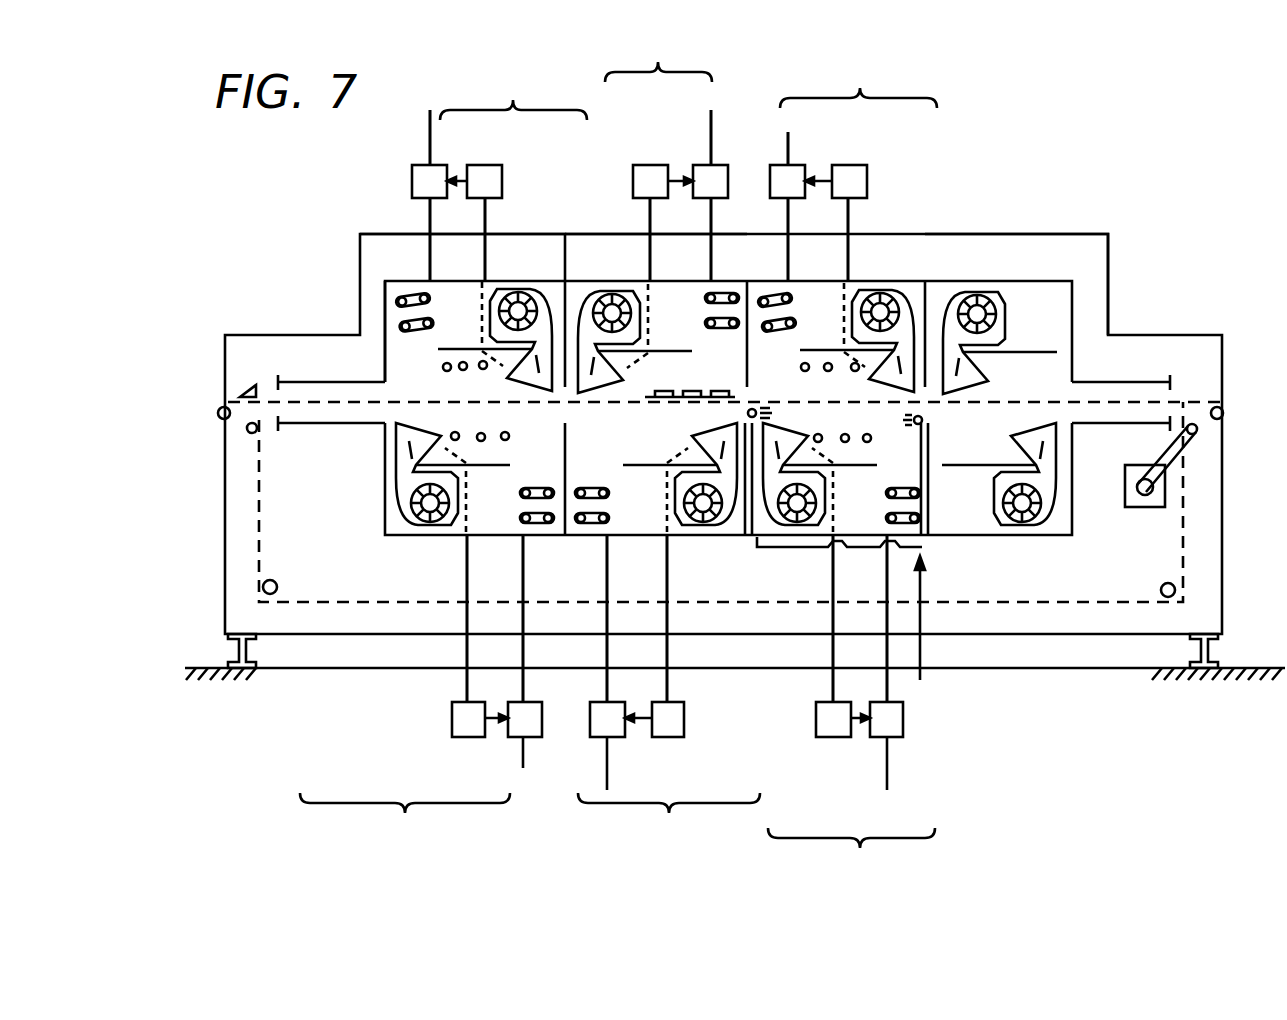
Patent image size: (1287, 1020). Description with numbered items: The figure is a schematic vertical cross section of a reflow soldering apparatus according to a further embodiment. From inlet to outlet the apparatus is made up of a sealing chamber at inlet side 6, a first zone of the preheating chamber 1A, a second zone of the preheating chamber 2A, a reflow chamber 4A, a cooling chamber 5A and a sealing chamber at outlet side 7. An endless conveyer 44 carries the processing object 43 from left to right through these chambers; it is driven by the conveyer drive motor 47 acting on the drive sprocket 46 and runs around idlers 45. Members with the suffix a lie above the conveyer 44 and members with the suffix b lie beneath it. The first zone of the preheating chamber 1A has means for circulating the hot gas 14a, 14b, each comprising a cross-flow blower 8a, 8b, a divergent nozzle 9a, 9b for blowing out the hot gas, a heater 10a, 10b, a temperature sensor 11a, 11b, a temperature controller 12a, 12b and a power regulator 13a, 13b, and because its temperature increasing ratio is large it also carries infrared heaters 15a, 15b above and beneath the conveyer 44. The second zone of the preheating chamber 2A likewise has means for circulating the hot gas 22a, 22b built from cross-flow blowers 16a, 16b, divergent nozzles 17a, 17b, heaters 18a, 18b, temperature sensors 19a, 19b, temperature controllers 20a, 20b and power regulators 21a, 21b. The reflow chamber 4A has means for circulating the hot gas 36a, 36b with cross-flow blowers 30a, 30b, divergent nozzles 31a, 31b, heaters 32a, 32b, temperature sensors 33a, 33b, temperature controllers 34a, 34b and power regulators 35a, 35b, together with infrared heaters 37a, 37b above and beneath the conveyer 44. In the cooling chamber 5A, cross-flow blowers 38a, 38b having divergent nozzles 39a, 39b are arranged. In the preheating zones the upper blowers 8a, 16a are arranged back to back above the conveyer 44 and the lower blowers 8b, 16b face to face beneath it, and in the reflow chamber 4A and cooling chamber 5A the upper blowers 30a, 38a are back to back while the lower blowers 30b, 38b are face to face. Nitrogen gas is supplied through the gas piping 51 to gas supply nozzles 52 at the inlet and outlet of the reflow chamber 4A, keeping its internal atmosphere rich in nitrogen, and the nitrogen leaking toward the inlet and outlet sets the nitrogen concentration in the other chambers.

The first zone of the preheating chamber 1A is at (392, 281).
The second zone of the preheating chamber 2A is at (727, 281).
The reflow chamber 4A is at (935, 281).
The cooling chamber 5A is at (1073, 281).
The sealing chamber at inlet side 6 is at (308, 382).
The sealing chamber at outlet side 7 is at (1150, 382).
The cross-flow blower 8a is at (518, 290).
The cross-flow blower 8b is at (413, 520).
The divergent nozzle 9a is at (552, 360).
The divergent nozzle 9b is at (405, 455).
The heater 10a is at (433, 297).
The heater 10b is at (520, 520).
The temperature sensor 11a is at (484, 245).
The temperature sensor 11b is at (467, 656).
The temperature controller 12a is at (485, 165).
The temperature controller 12b is at (467, 740).
The power regulator 13a is at (440, 165).
The power regulator 13b is at (512, 740).
The means for circulating the hot gas 14a is at (513, 98).
The means for circulating the hot gas 14b is at (405, 818).
The infrared heater 15a is at (463, 371).
The infrared heater 15b is at (458, 433).
The cross-flow blower 16a is at (612, 290).
The cross-flow blower 16b is at (717, 510).
The divergent nozzle 17a is at (579, 330).
The divergent nozzle 17b is at (736, 505).
The heater 18a is at (712, 296).
The heater 18b is at (612, 520).
The temperature sensor 19a is at (650, 243).
The temperature sensor 19b is at (667, 686).
The temperature controller 20a is at (650, 165).
The temperature controller 20b is at (660, 740).
The power regulator 21a is at (711, 165).
The power regulator 21b is at (592, 740).
The means for circulating the hot gas 22a is at (658, 58).
The means for circulating the hot gas 22b is at (669, 818).
The cross-flow blower 30a is at (888, 292).
The cross-flow blower 30b is at (808, 522).
The divergent nozzle 31a is at (914, 330).
The divergent nozzle 31b is at (778, 460).
The heater 32a is at (798, 297).
The heater 32b is at (885, 520).
The temperature sensor 33a is at (848, 243).
The temperature sensor 33b is at (833, 686).
The temperature controller 34a is at (848, 165).
The temperature controller 34b is at (833, 740).
The power regulator 35a is at (788, 160).
The power regulator 35b is at (893, 740).
The means for circulating the hot gas 36a is at (858, 84).
The means for circulating the hot gas 36b is at (851, 853).
The infrared heater 37a is at (828, 372).
The infrared heater 37b is at (845, 434).
The cross-flow blower 38a is at (1003, 281).
The cross-flow blower 38b is at (1008, 522).
The divergent nozzle 39a is at (963, 281).
The divergent nozzle 39b is at (1047, 470).
The processing object 43 is at (668, 400).
The endless conveyer 44 is at (590, 405).
The idler 45 is at (1160, 588).
The drive sprocket 46 is at (1195, 431).
The conveyer drive motor 47 is at (1145, 508).
The gas piping 51 is at (926, 575).
The gas supply nozzle 52 is at (925, 421).